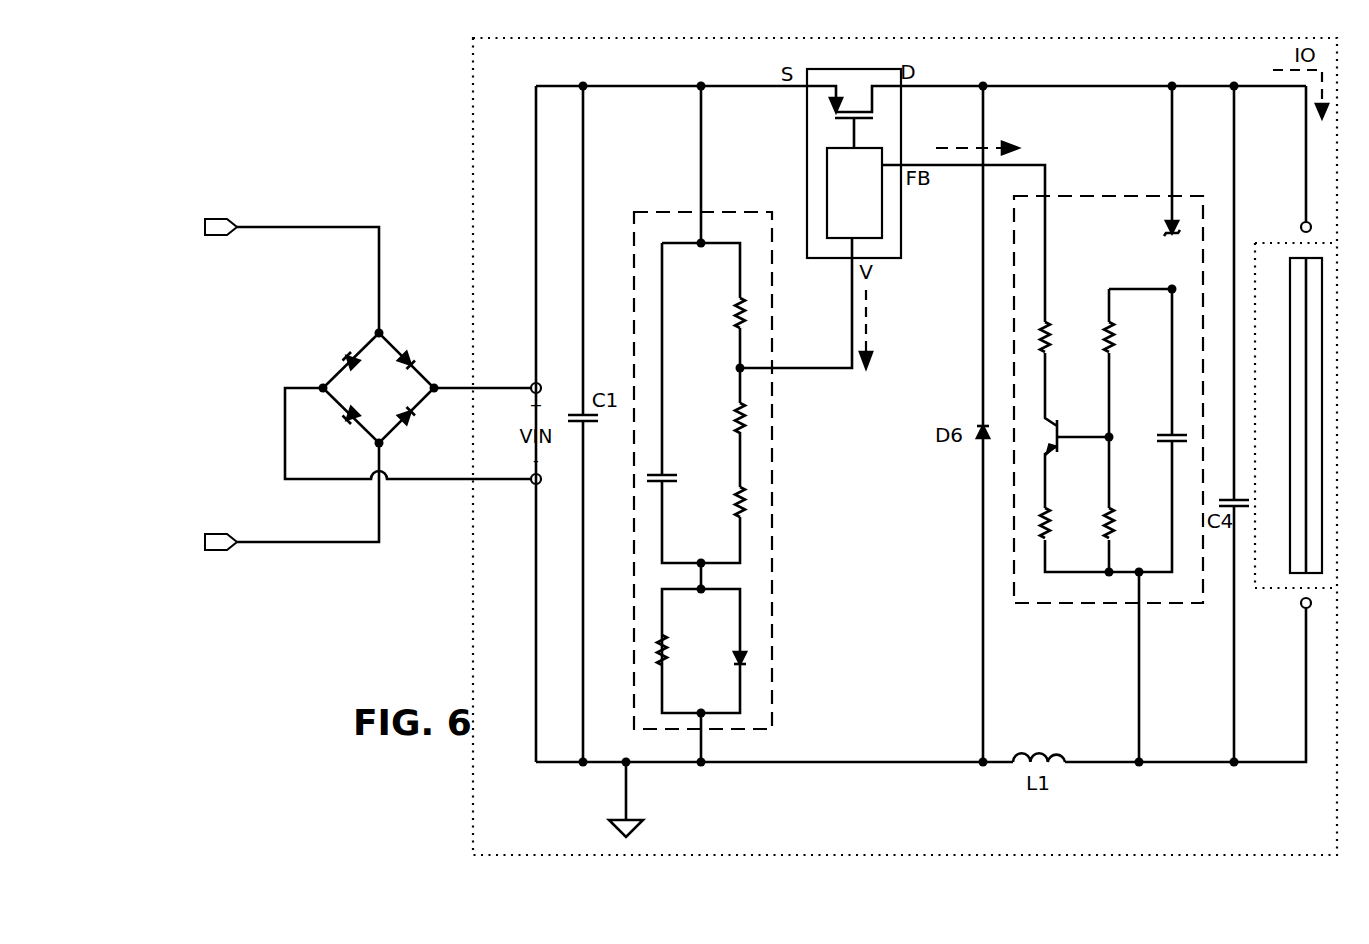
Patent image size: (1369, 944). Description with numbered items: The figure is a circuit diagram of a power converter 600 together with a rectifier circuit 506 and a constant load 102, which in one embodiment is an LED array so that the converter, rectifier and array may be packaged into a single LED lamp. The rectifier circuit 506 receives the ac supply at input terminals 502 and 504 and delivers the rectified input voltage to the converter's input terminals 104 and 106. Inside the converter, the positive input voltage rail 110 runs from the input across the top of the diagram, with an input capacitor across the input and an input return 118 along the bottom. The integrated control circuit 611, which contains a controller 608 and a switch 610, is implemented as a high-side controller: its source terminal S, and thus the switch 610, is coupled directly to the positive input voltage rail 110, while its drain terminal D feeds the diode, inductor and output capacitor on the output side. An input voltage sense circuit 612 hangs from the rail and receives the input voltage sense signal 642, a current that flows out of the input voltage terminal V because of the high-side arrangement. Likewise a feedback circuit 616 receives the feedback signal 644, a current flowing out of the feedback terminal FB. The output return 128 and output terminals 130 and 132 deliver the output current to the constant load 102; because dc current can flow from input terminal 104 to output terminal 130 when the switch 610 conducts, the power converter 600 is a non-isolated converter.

The power converter 600 is at (465, 118).
The input terminal 502 is at (212, 208).
The input terminal 504 is at (225, 564).
The rectifier circuit 506 is at (390, 328).
The input terminal 104 is at (530, 378).
The input terminal 106 is at (531, 488).
The positive input voltage rail 110 is at (657, 92).
The input return 118 is at (640, 802).
The input voltage sense circuit 612 is at (727, 212).
The integrated control circuit 611 is at (903, 255).
The switch 610 is at (851, 98).
The controller 608 is at (854, 193).
The input voltage sense signal 642 is at (874, 322).
The feedback signal 644 is at (1003, 126).
The feedback circuit 616 is at (1095, 192).
The output return 128 is at (1181, 768).
The output terminal 130 is at (1300, 218).
The output terminal 132 is at (1300, 620).
The constant load 102 is at (1288, 340).